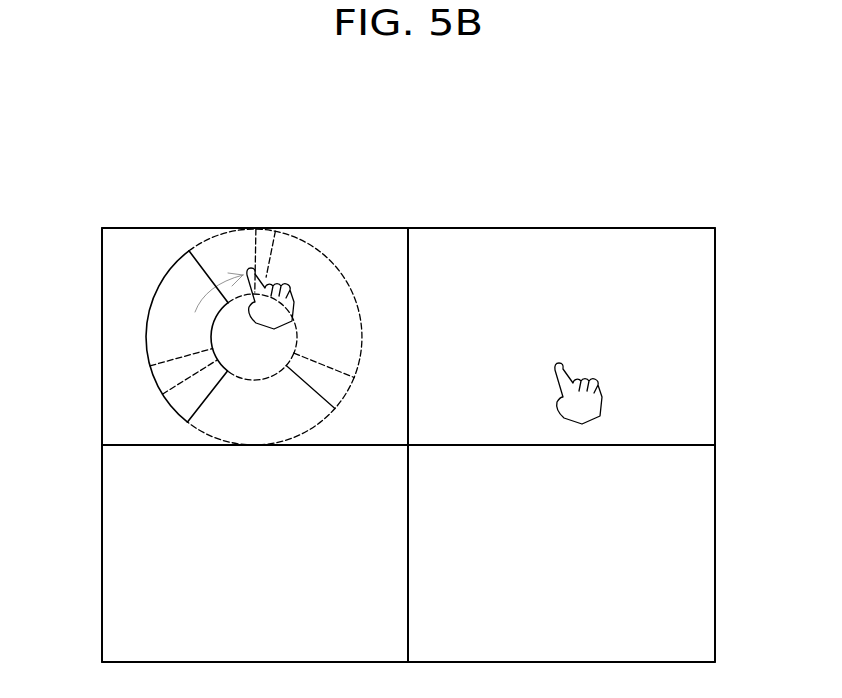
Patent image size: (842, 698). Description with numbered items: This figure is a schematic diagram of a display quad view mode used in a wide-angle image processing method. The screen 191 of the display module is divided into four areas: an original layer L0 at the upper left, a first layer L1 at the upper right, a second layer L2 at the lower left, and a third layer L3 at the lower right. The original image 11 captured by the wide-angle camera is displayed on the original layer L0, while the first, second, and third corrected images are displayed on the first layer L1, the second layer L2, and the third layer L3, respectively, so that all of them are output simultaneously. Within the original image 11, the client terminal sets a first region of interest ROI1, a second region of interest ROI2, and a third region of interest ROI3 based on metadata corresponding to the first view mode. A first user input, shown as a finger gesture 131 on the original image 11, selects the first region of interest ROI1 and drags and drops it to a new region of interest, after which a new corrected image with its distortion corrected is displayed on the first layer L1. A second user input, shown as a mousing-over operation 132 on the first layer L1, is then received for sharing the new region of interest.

The screen 191 is at (707, 183).
The original layer L0 is at (102, 334).
The first layer L1 is at (715, 335).
The second layer L2 is at (102, 550).
The third layer L3 is at (715, 550).
The original image 11 is at (265, 230).
The first region of interest ROI1 is at (163, 377).
The second region of interest ROI2 is at (328, 293).
The third region of interest ROI3 is at (238, 418).
The first touch input (finger) 131 is at (282, 286).
The mousing-over operation 132 is at (588, 405).